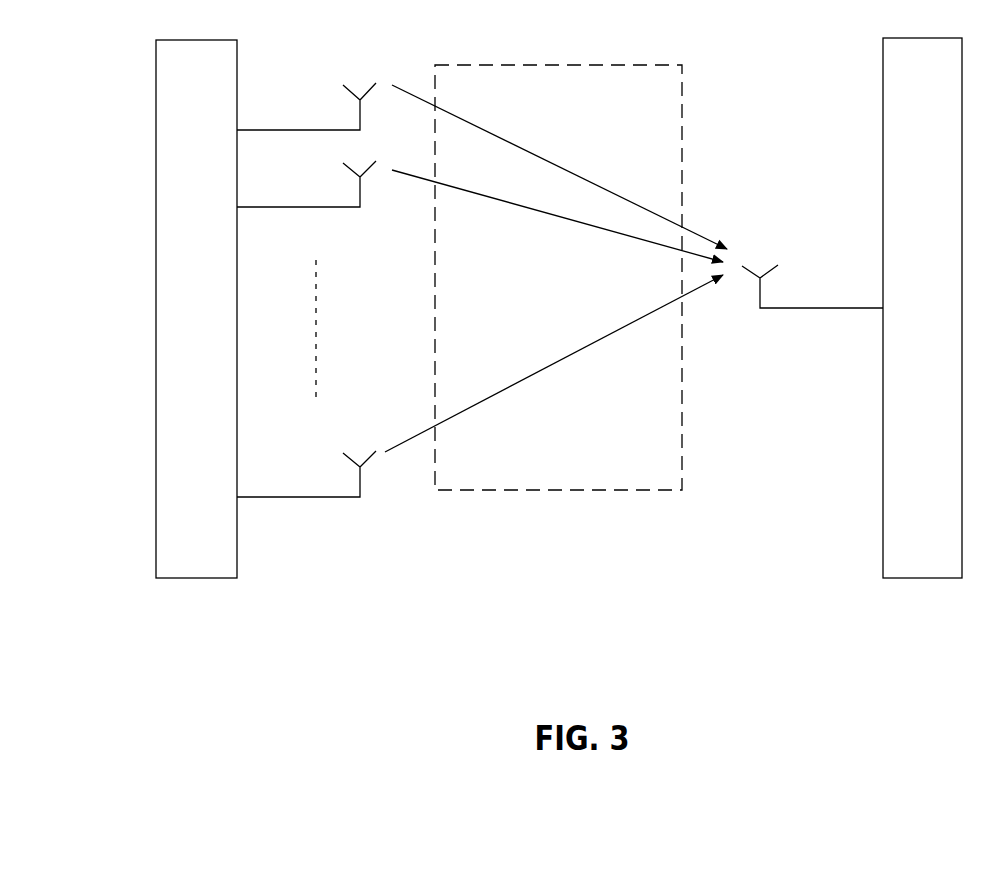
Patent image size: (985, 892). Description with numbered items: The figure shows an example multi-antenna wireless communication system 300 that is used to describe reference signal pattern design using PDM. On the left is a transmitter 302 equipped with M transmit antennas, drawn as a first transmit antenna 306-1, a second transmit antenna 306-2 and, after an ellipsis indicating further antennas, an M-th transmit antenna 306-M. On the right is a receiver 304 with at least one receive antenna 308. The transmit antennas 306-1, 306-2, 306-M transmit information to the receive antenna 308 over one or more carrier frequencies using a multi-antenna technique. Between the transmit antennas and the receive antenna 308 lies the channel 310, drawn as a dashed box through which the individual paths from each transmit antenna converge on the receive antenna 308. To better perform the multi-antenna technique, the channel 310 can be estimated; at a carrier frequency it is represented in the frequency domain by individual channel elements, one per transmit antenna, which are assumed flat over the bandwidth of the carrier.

The multi-antenna wireless communication system 300 is at (244, 665).
The transmitter 302 is at (196, 309).
The receiver 304 is at (922, 308).
The transmit antenna 306-1 is at (339, 97).
The transmit antenna 306-2 is at (339, 174).
The transmit antenna 306-M is at (339, 465).
The receive antenna 308 is at (775, 272).
The channel 310 is at (558, 252).